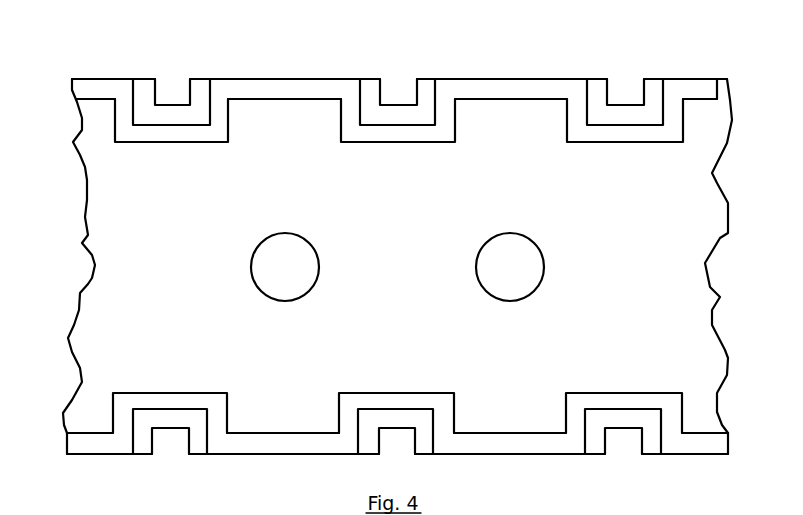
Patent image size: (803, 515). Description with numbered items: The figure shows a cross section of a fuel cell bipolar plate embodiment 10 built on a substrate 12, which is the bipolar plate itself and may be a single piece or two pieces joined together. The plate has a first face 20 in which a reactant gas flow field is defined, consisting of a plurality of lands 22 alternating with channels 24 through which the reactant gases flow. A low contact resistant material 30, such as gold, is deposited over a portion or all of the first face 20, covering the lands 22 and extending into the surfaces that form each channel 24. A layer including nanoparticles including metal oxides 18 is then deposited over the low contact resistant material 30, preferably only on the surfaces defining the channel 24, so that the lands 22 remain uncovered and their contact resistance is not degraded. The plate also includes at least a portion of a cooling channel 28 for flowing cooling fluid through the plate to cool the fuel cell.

The plate assembly 10 is at (60, 52).
The substrate 12 is at (98, 147).
The layer including nanoparticles including metal oxides 18 is at (425, 88).
The first face 20 is at (84, 93).
The lands 22 is at (113, 88).
The channels 24 is at (393, 88).
The cooling channel 28 is at (504, 272).
The low contact resistant material 30 is at (700, 88).